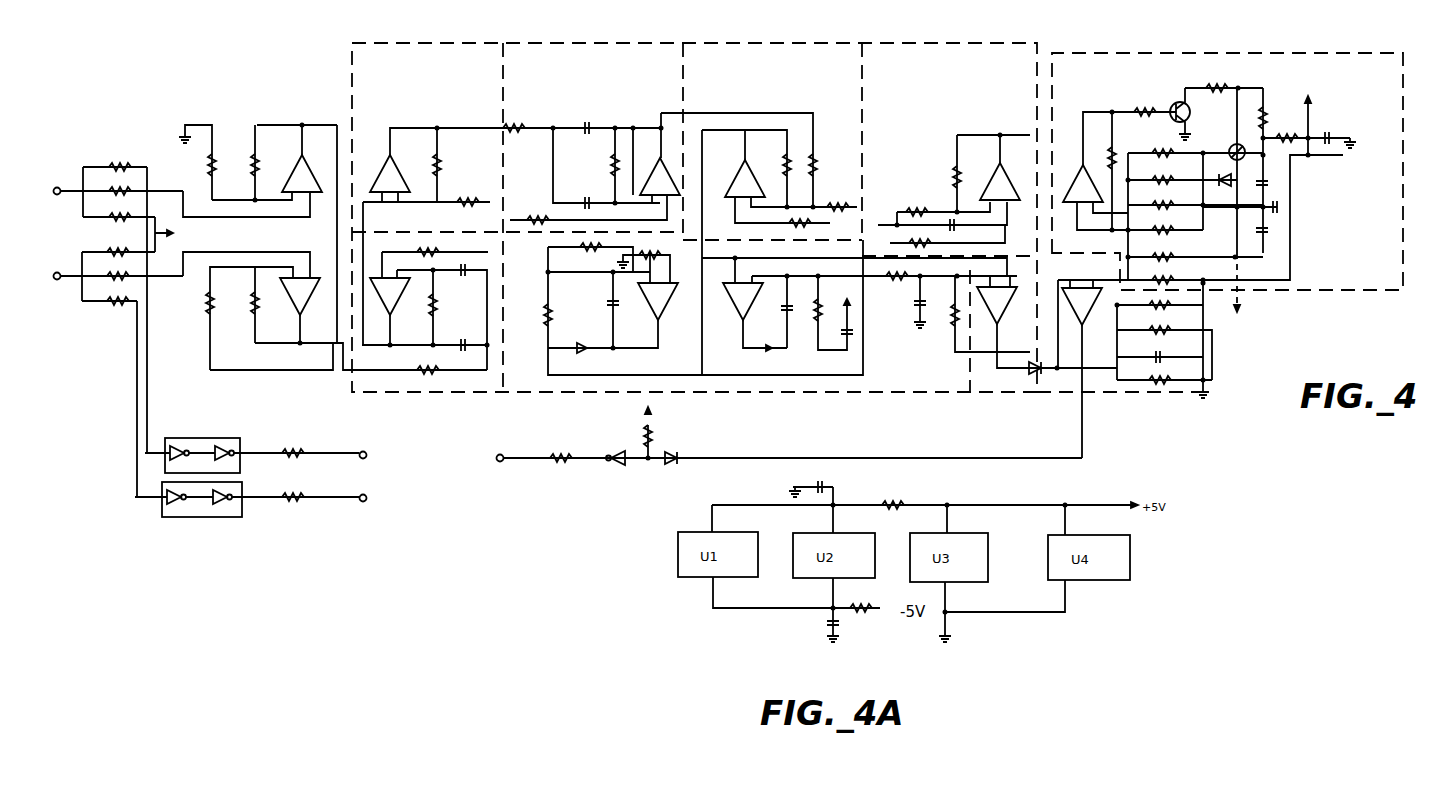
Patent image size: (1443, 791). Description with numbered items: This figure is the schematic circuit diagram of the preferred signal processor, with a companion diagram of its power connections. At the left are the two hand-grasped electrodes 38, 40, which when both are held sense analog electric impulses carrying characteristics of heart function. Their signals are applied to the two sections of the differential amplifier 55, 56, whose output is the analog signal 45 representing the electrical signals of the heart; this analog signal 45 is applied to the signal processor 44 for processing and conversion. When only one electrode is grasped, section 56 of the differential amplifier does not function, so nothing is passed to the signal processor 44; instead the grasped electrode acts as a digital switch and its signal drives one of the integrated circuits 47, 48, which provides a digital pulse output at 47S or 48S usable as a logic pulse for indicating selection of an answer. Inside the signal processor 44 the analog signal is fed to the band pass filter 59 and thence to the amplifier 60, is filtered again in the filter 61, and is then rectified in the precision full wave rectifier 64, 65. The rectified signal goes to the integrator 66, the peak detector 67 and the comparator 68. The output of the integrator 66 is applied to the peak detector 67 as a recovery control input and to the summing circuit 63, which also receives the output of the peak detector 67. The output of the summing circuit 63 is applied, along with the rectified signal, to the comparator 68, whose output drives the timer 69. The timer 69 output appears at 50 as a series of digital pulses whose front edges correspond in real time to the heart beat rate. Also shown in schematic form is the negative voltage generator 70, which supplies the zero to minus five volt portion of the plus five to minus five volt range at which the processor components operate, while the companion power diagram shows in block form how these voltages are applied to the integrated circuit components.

The electrode 38 is at (171, 308).
The electrode 40 is at (171, 372).
The signal processor 44 is at (600, 43).
The analog signal 45 is at (298, 372).
The integrated circuit 47 is at (205, 438).
The integrated circuit 48 is at (205, 517).
The pulse output 47S is at (366, 450).
The pulse output 48S is at (368, 506).
The timer output 50 is at (503, 454).
The differential amplifier section 55 is at (280, 155).
The differential amplifier section 56 is at (277, 323).
The band pass filter 59 is at (465, 320).
The amplifier 60 is at (471, 171).
The filter 61 is at (583, 168).
The summing circuit 63 is at (941, 331).
The precision full wave rectifier 64 is at (582, 317).
The precision full wave rectifier 65 is at (728, 164).
The integrator 66 is at (904, 141).
The peak detector 67 is at (716, 338).
The comparator 68 is at (1034, 335).
The timer 69 is at (1132, 352).
The negative voltage generator 70 is at (1131, 52).